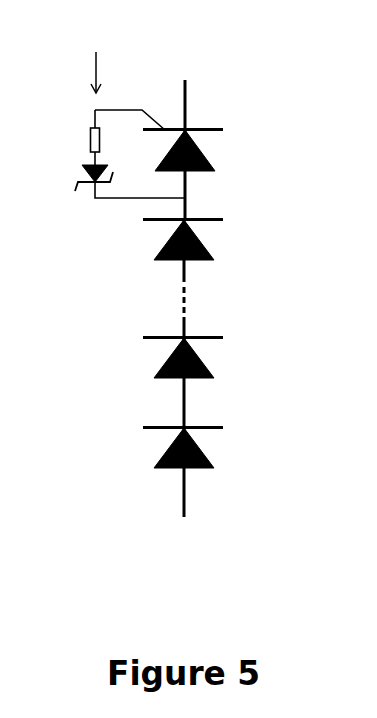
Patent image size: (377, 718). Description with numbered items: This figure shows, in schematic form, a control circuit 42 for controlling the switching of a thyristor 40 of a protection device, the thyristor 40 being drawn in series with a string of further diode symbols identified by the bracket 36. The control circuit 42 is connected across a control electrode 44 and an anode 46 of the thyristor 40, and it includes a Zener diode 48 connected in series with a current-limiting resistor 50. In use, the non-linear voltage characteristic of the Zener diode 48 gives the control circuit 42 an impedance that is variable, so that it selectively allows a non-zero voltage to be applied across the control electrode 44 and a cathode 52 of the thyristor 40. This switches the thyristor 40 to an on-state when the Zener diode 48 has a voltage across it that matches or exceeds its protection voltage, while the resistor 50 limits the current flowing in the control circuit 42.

The string of series-connected diodes 36 is at (275, 333).
The thyristor 40 is at (212, 150).
The control circuit 42 is at (96, 61).
The control electrode 44 is at (166, 124).
The anode 46 is at (257, 195).
The Zener diode 48 is at (85, 188).
The current-limiting resistor 50 is at (86, 133).
The cathode 52 is at (192, 113).